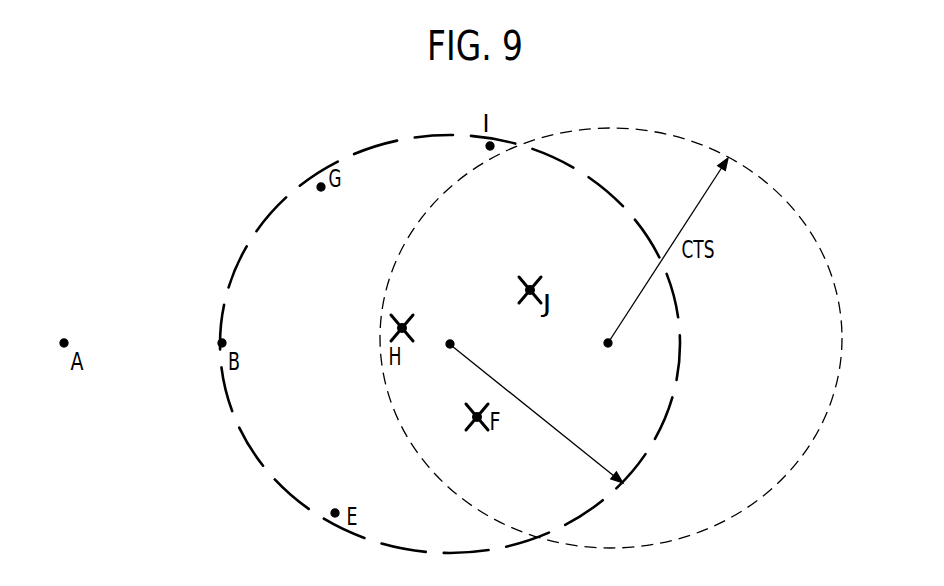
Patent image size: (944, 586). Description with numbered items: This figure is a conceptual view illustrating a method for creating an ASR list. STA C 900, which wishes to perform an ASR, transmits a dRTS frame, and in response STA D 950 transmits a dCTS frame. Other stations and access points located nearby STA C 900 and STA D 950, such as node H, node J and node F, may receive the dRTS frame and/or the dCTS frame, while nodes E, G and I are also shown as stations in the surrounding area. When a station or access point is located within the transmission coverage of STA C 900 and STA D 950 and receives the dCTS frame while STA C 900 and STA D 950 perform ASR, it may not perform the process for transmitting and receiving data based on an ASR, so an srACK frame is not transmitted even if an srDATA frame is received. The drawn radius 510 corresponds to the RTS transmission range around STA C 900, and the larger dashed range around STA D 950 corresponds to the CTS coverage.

The STA C 900 is at (451, 343).
The STA D 950 is at (612, 342).
The RTS radius 510 is at (537, 414).